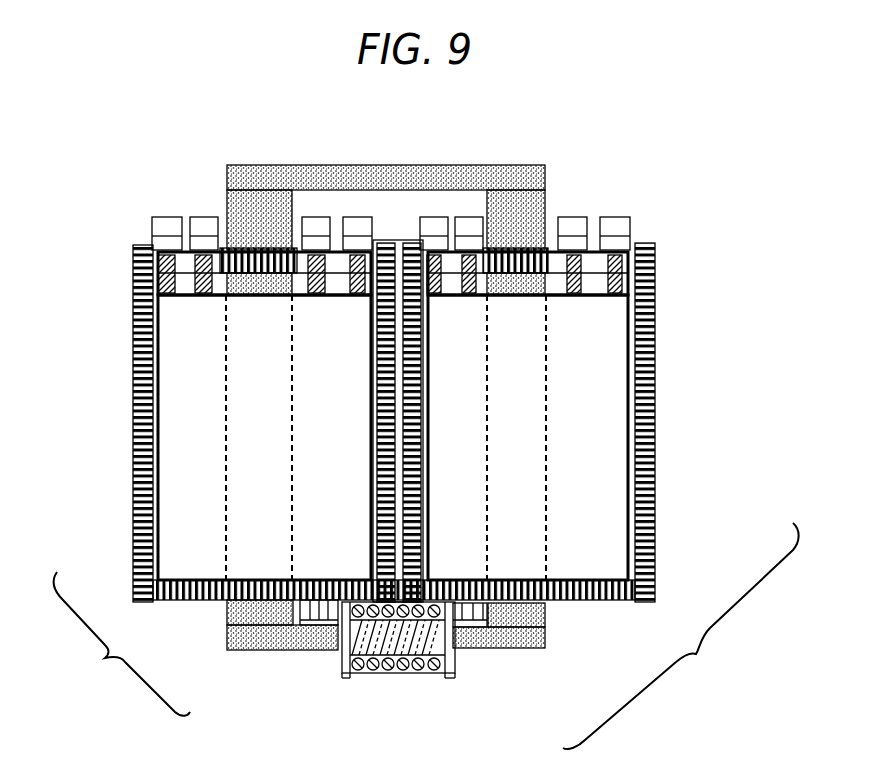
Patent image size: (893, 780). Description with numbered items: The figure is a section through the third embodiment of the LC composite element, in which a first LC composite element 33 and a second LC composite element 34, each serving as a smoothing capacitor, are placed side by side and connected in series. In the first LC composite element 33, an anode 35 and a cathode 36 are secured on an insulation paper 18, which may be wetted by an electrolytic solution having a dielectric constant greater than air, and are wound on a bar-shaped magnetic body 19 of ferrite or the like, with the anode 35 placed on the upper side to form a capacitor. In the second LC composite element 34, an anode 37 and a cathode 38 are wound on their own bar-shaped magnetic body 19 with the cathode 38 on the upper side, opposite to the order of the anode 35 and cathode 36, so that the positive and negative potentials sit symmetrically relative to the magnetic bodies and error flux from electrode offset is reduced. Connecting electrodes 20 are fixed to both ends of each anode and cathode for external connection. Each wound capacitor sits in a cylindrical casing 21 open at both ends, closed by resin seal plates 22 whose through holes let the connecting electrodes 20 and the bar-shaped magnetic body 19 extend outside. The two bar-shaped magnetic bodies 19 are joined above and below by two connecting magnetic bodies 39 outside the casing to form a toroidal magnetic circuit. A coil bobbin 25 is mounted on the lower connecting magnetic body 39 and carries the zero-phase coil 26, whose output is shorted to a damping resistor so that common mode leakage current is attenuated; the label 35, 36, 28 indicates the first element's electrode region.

The connecting magnetic body 39 is at (360, 176).
The bar-shaped magnetic body 19 is at (235, 205).
The seal plate 22 is at (263, 250).
The cylindrical casing 21 is at (140, 412).
The connecting electrode 20 is at (613, 222).
The anode 37 is at (194, 416).
The cathode 38 is at (194, 416).
The insulation paper 18 is at (172, 497).
The anode 35 is at (604, 416).
The cathode 36 is at (604, 416).
The right cell 28 is at (610, 453).
The coil bobbin 25 is at (338, 667).
The zero-phase coil 26 is at (390, 663).
The second LC composite element 34 is at (122, 644).
The first LC composite element 33 is at (681, 636).